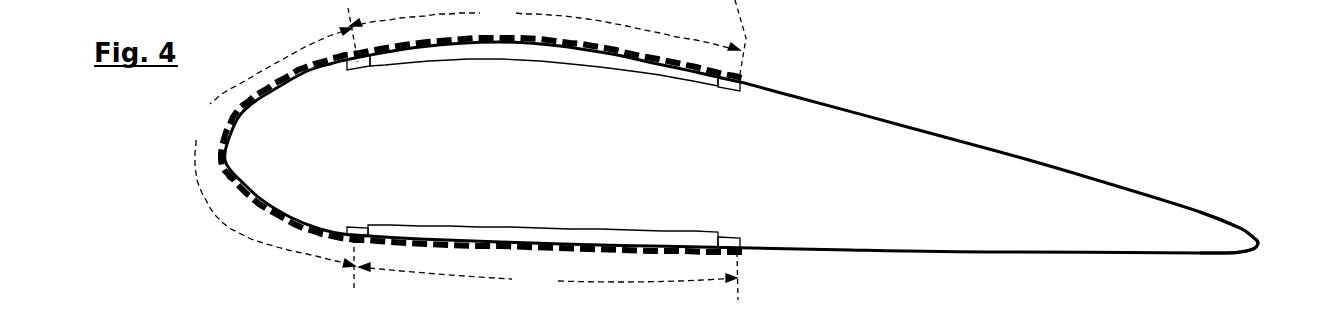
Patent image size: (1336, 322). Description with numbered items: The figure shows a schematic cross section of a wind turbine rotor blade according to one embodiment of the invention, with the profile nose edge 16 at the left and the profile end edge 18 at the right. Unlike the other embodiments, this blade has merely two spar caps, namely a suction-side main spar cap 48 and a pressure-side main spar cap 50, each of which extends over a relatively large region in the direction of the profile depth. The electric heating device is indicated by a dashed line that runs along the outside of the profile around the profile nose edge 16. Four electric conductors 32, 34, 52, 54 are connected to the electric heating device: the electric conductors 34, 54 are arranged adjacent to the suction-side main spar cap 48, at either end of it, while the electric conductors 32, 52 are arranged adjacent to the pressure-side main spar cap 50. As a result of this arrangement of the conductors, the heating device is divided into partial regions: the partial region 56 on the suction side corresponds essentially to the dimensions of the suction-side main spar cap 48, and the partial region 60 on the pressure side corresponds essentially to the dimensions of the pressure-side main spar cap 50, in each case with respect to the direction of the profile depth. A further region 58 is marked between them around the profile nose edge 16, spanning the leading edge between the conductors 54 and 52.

The profile nose edge 16 is at (223, 160).
The profile end edge 18 is at (1261, 242).
The electric conductor 32 is at (733, 238).
The electric conductor 34 is at (728, 89).
The suction-side main spar cap 48 is at (487, 50).
The pressure-side main spar cap 50 is at (572, 237).
The electric conductor 52 is at (356, 227).
The electric conductor 54 is at (353, 66).
The partial region 56 is at (547, 40).
The leading edge region 58 is at (267, 147).
The partial region 60 is at (546, 269).